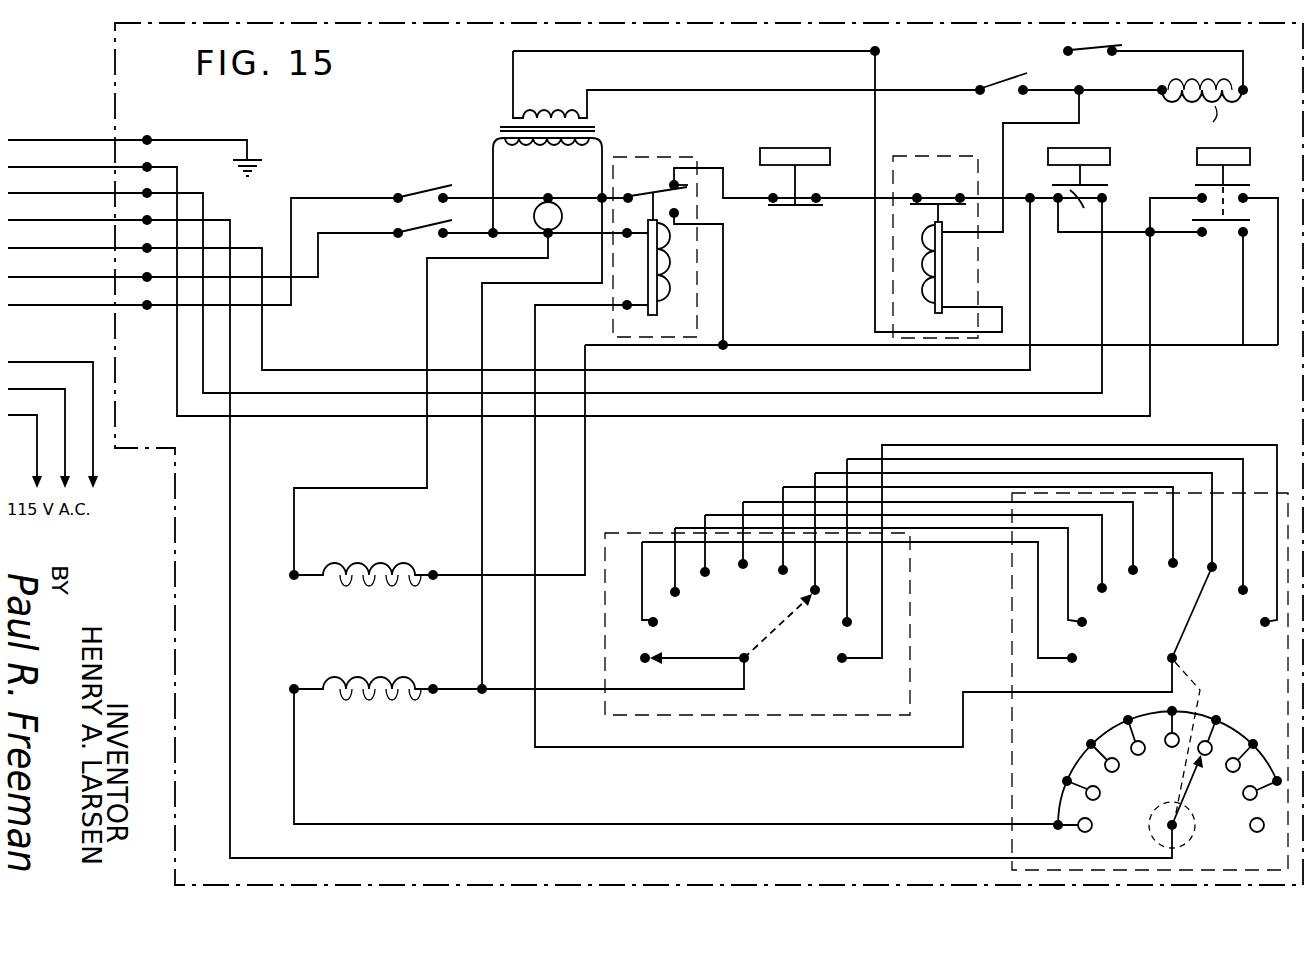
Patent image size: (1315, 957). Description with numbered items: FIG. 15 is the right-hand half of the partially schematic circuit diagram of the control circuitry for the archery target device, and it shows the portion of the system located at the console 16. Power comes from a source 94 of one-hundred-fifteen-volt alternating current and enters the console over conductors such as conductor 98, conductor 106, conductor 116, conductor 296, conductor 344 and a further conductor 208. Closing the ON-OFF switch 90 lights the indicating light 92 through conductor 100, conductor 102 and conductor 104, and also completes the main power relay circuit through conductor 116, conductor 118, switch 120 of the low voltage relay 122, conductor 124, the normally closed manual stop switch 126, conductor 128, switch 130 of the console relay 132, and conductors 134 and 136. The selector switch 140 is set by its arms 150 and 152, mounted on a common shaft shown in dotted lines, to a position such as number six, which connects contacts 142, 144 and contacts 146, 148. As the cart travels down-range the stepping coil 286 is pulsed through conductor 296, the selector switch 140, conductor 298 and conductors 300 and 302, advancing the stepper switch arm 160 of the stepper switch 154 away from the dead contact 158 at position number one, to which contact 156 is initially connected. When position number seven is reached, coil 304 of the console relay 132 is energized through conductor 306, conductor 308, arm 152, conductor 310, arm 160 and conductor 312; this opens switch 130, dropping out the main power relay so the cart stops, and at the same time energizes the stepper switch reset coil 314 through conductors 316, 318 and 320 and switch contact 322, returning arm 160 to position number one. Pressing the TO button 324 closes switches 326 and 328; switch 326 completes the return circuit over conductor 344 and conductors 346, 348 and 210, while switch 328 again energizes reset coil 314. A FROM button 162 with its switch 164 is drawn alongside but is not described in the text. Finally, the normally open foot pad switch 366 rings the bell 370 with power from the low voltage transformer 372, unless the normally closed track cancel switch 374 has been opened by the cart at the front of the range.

The console 16 is at (111, 97).
The source of 115-volt AC current 94 is at (52, 522).
The conductor 344 is at (81, 164).
The conductor 208 is at (81, 189).
The conductor 296 is at (81, 216).
The conductor 116 is at (79, 244).
The conductor 106 is at (81, 273).
The conductor 98 is at (73, 301).
The ON-OFF switch 90 is at (433, 186).
The conductor 104 is at (468, 238).
The conductor 100 is at (514, 196).
The conductor 136 is at (577, 196).
The conductor 102 is at (520, 228).
The indicating light 92 is at (572, 238).
The conductor 306 is at (586, 239).
The conductor 316 is at (426, 320).
The low voltage transformer 372 is at (548, 97).
The console relay 132 is at (700, 312).
The conductor 134 is at (620, 192).
The switch of console relay 130 is at (668, 178).
The conductor 128 is at (712, 166).
The coil of console relay 304 is at (667, 274).
The conductor 308 is at (538, 343).
The switch contact 322 is at (680, 213).
The conductor 320 is at (724, 292).
The conductor 318 is at (586, 485).
The conductor 302 is at (482, 479).
The conductor 124 is at (847, 203).
The manual stop switch 126 is at (809, 206).
The conductor 118 is at (992, 185).
The switch of low voltage relay 120 is at (931, 200).
The low voltage relay 122 is at (980, 287).
The conductor 210 is at (1037, 196).
The foot pad switch 366 is at (998, 80).
The track cancel switch 374 is at (1100, 55).
The bell 370 is at (1212, 80).
The FROM push button 162 is at (1095, 148).
The switch blade 164 is at (1081, 211).
The conductor 348 is at (1126, 235).
The conductor 346 is at (1182, 197).
The TO button 324 is at (1228, 147).
The TO switch 326 is at (1246, 186).
The TO switch 328 is at (1233, 222).
The stepper switch reset coil 314 is at (370, 562).
The stepping coil 286 is at (384, 700).
The conductor 300 is at (466, 693).
The conductor 312 is at (588, 668).
The conductor 298 is at (702, 824).
The stepper switch 154 is at (905, 638).
The conductor 310 is at (830, 472).
The contact of stepper switch 156 is at (748, 661).
The dead contact 158 is at (650, 657).
The stepper switch arm 160 is at (770, 633).
The contact of selector switch 144 is at (1165, 660).
The selector switch arm 152 is at (1187, 622).
The contact of selector switch 148 is at (1207, 570).
The selector switch 140 is at (1006, 760).
The selector switch arm 150 is at (1185, 785).
The contact of selector switch 146 is at (1213, 760).
The contact of selector switch 142 is at (1180, 831).